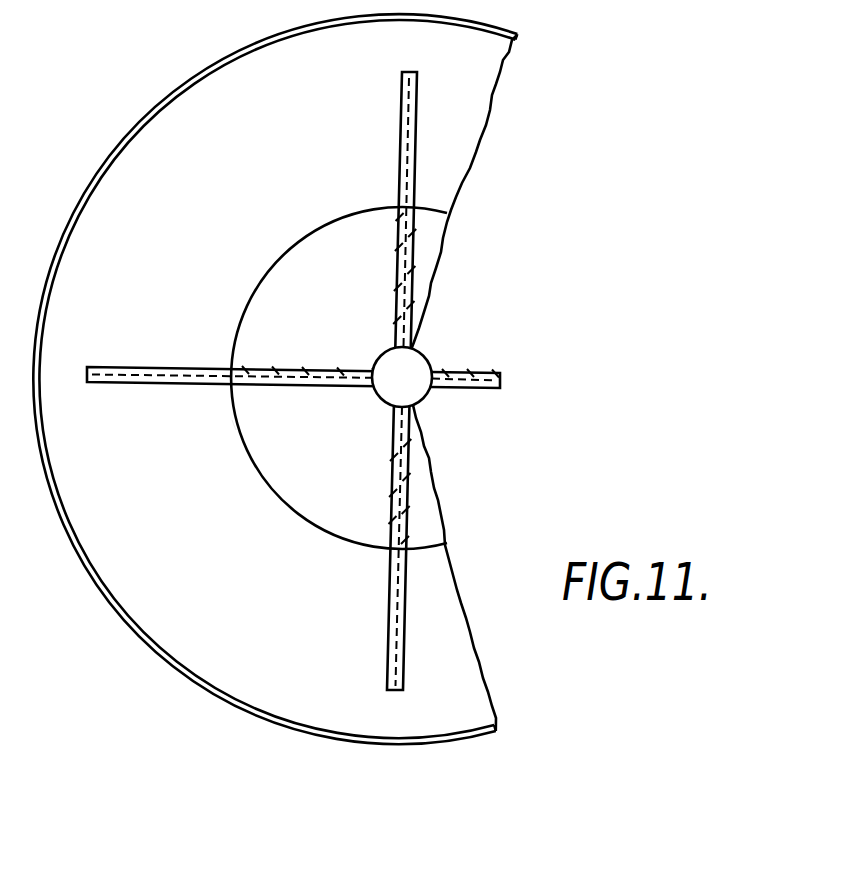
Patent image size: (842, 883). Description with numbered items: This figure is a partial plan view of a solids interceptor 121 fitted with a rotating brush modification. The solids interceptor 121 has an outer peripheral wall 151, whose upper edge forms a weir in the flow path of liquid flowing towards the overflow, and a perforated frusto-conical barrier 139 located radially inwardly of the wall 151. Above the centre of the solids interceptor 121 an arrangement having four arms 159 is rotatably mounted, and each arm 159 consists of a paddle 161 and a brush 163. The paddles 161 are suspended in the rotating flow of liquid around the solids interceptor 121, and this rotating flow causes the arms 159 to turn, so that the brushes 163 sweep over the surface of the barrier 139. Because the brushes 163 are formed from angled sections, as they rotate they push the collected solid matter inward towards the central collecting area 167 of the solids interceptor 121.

The solids interceptor 121 is at (156, 96).
The perforated frusto-conical barrier 139 is at (277, 450).
The outer peripheral wall 151 is at (287, 509).
The arm 159 is at (398, 177).
The paddle 161 is at (403, 115).
The brush 163 is at (392, 277).
The central collecting area 167 is at (388, 360).